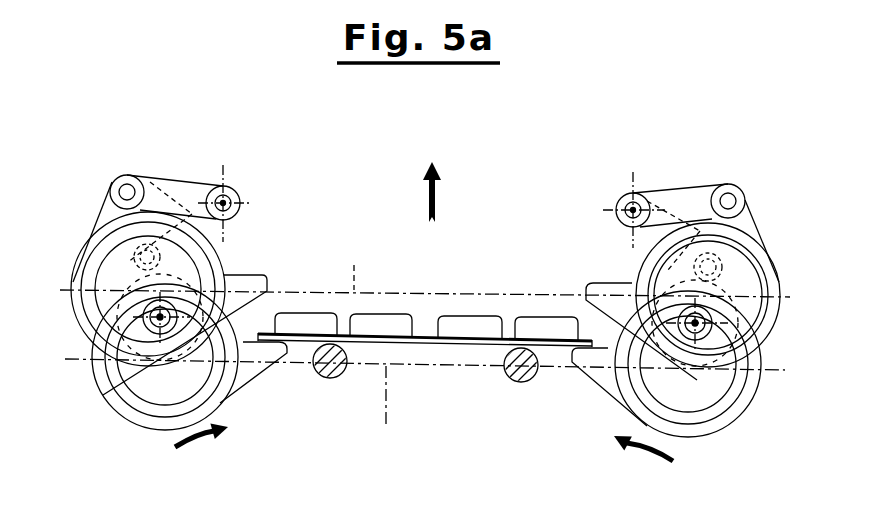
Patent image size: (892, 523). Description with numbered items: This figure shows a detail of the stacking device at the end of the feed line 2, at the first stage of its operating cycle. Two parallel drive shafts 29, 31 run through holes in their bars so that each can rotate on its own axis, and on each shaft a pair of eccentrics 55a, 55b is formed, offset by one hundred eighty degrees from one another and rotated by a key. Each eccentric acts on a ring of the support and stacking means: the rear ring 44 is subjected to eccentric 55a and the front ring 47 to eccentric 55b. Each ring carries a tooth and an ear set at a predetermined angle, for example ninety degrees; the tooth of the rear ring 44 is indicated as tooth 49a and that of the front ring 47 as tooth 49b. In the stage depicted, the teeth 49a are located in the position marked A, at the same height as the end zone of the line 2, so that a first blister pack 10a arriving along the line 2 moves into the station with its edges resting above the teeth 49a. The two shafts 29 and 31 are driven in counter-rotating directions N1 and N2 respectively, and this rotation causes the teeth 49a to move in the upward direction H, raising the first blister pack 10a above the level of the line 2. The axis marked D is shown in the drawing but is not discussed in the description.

The feed line 2 is at (438, 408).
The first blister pack 10a is at (470, 327).
The drive shaft 29 is at (684, 305).
The drive shaft 31 is at (147, 307).
The rear ring 44 is at (143, 419).
The front ring 47 is at (95, 314).
The tooth 49a is at (258, 368).
The tooth 49b is at (253, 277).
The eccentric 55a is at (722, 439).
The eccentric 55b is at (769, 226).
The upward direction H is at (431, 180).
The axis D is at (360, 264).
The position A is at (385, 411).
The rotating direction N1 is at (643, 461).
The rotating direction N2 is at (208, 447).